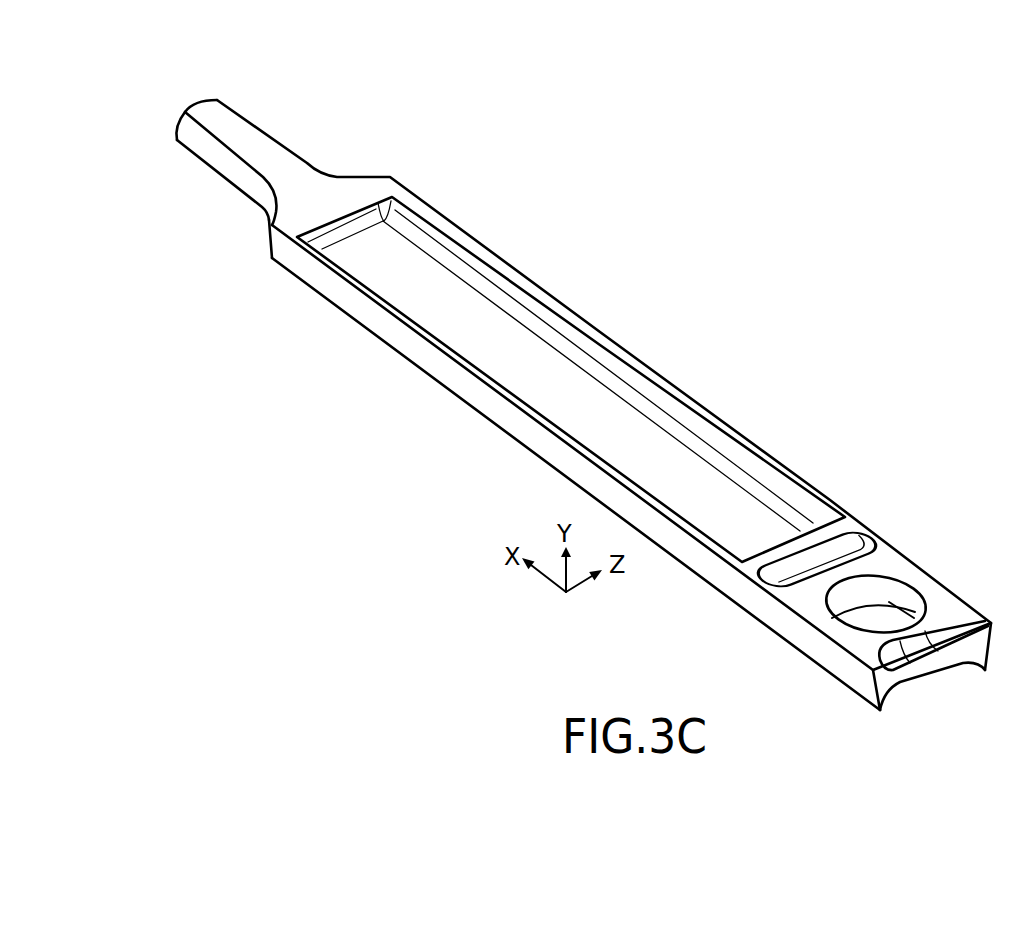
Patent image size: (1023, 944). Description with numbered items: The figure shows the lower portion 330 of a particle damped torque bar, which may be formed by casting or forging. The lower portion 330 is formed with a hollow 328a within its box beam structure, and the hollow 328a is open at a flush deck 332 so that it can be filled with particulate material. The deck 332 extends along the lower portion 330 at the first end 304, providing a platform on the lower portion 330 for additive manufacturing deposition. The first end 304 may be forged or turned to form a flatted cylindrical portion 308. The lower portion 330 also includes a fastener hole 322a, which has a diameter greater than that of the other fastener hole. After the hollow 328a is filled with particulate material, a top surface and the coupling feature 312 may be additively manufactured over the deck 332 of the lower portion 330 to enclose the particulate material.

The first end 304 is at (316, 119).
The flatted cylindrical portion 308 is at (220, 175).
The coupling feature 312 is at (936, 501).
The fastener hole 322a is at (905, 578).
The hollow 328a is at (590, 403).
The lower portion 330 is at (648, 274).
The flush deck 332 is at (332, 180).